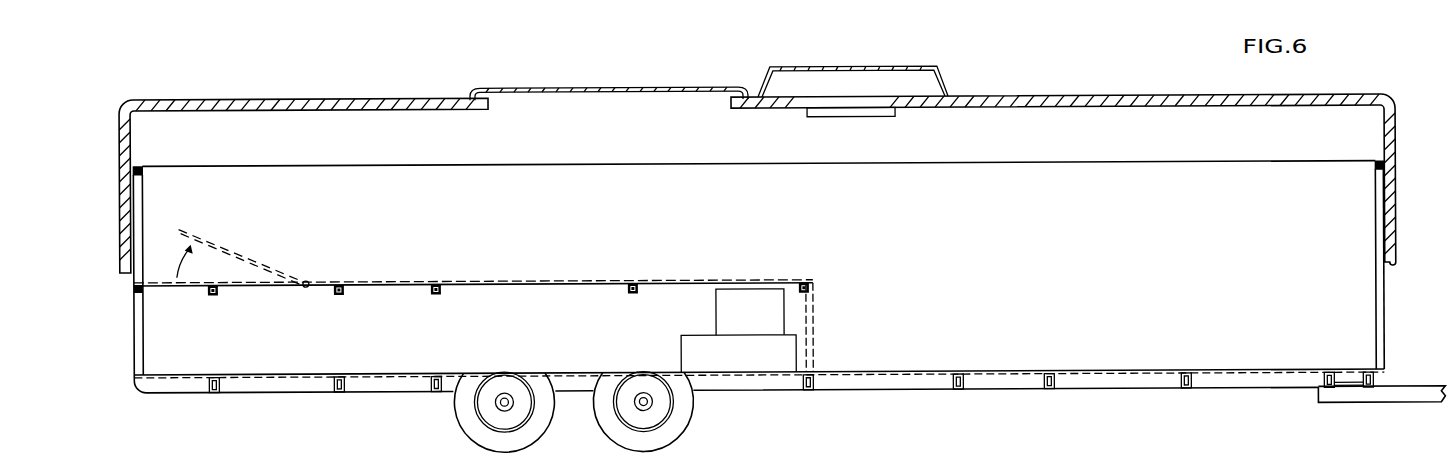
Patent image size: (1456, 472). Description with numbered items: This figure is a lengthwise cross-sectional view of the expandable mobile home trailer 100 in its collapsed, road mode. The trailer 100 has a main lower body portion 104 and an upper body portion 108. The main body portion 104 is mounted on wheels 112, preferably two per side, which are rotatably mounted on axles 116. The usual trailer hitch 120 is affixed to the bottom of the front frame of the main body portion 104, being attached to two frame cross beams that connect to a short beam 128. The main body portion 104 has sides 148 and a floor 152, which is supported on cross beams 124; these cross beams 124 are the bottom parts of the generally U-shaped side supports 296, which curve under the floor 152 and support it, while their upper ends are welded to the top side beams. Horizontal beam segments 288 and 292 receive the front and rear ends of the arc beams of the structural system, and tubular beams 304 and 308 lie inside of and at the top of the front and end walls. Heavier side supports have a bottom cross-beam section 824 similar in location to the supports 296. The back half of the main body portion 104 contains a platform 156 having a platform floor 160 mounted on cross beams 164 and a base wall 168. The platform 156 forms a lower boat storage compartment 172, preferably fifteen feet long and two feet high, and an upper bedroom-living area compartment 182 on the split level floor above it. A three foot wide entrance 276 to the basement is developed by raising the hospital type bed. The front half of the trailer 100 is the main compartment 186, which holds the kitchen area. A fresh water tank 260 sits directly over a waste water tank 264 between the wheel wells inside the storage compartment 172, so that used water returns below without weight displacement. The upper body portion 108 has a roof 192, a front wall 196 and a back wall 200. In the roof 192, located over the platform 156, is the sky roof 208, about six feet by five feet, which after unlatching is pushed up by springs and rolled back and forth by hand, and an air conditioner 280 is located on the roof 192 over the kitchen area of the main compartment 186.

The trailer 100 is at (376, 78).
The main body portion 104 is at (1383, 312).
The upper body portion 108 is at (1073, 94).
The wheels 112 is at (478, 438).
The axles 116 is at (495, 405).
The trailer hitch 120 is at (1380, 399).
The cross beams 124 is at (338, 395).
The short beam 128 is at (1348, 376).
The sides 148 is at (170, 197).
The floor 152 is at (396, 376).
The platform 156 is at (437, 280).
The platform floor 160 is at (612, 282).
The cross beams 164 is at (212, 297).
The base wall 168 is at (812, 335).
The boat storage compartment 172 is at (178, 352).
The bedroom-living area compartment 182 is at (247, 128).
The main compartment 186 is at (1092, 175).
The roof 192 is at (993, 100).
The front wall 196 is at (1400, 118).
The back wall 200 is at (120, 136).
The sky roof 208 is at (622, 89).
The fresh water tank 260 is at (717, 315).
The waste water tank 264 is at (680, 350).
The entrance 276 is at (228, 250).
The air conditioner 280 is at (853, 86).
The horizontal beam segment 288 is at (1133, 394).
The horizontal beam segment 292 is at (278, 394).
The U-shaped side supports 296 is at (133, 318).
The tubular beam 304 is at (1395, 170).
The tubular beam 308 is at (130, 192).
The bottom cross-beam section 824 is at (432, 393).